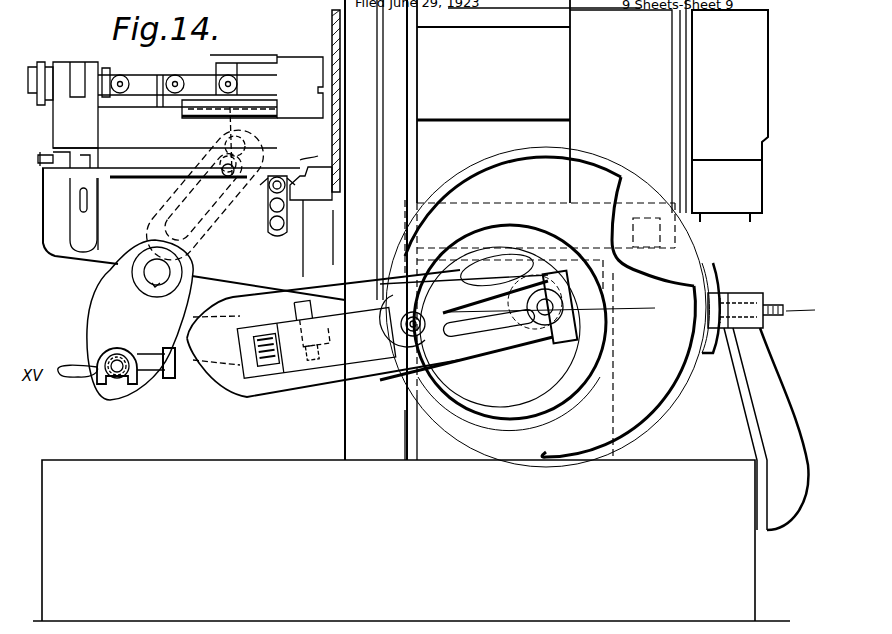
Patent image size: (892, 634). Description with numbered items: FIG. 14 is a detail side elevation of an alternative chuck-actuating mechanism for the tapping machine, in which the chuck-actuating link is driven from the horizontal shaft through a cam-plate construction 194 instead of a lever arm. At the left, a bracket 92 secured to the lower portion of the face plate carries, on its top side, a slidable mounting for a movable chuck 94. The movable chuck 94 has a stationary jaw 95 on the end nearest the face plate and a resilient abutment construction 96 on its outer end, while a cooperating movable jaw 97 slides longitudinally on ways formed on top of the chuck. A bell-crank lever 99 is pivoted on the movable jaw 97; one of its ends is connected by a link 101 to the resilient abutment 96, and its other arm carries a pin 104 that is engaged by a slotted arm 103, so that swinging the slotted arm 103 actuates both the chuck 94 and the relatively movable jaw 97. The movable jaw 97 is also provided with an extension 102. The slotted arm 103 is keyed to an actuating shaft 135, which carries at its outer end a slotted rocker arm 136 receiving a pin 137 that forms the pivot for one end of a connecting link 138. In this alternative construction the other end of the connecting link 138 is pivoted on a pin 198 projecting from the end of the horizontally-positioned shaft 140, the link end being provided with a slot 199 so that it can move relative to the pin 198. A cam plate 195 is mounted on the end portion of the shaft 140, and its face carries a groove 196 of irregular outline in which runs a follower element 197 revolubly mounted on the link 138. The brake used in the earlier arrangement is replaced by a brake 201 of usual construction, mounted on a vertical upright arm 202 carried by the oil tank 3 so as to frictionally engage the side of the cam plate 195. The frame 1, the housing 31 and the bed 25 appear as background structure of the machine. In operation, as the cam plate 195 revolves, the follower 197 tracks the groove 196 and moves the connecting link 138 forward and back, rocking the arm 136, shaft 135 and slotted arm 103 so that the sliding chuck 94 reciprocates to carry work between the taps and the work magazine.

The frame 1 is at (493, 101).
The oil tank 3 is at (75, 462).
The bed plate 25 is at (331, 15).
The housing 31 is at (669, 111).
The bracket 92 is at (60, 243).
The movable chuck 94 is at (294, 118).
The stationary jaw 95 is at (331, 55).
The resilient abutment construction 96 is at (63, 95).
The movable jaw 97 is at (275, 70).
The bell-crank lever 99 is at (207, 78).
The link 101 is at (138, 72).
The extension 102 is at (241, 60).
The slotted arm 103 is at (226, 230).
The pin 104 is at (226, 162).
The actuating shaft 135 is at (153, 272).
The rocker arm 136 is at (105, 315).
The pin 137 is at (122, 380).
The connecting link 138 is at (277, 382).
The horizontally-positioned shaft 140 is at (590, 306).
The cam-plate construction 194 is at (486, 160).
The cam plate 195 is at (646, 417).
The groove 196 is at (462, 425).
The follower element 197 is at (413, 357).
The pin 198 is at (543, 312).
The slot 199 is at (475, 323).
The brake 201 is at (713, 278).
The vertical upright arm 202 is at (766, 404).